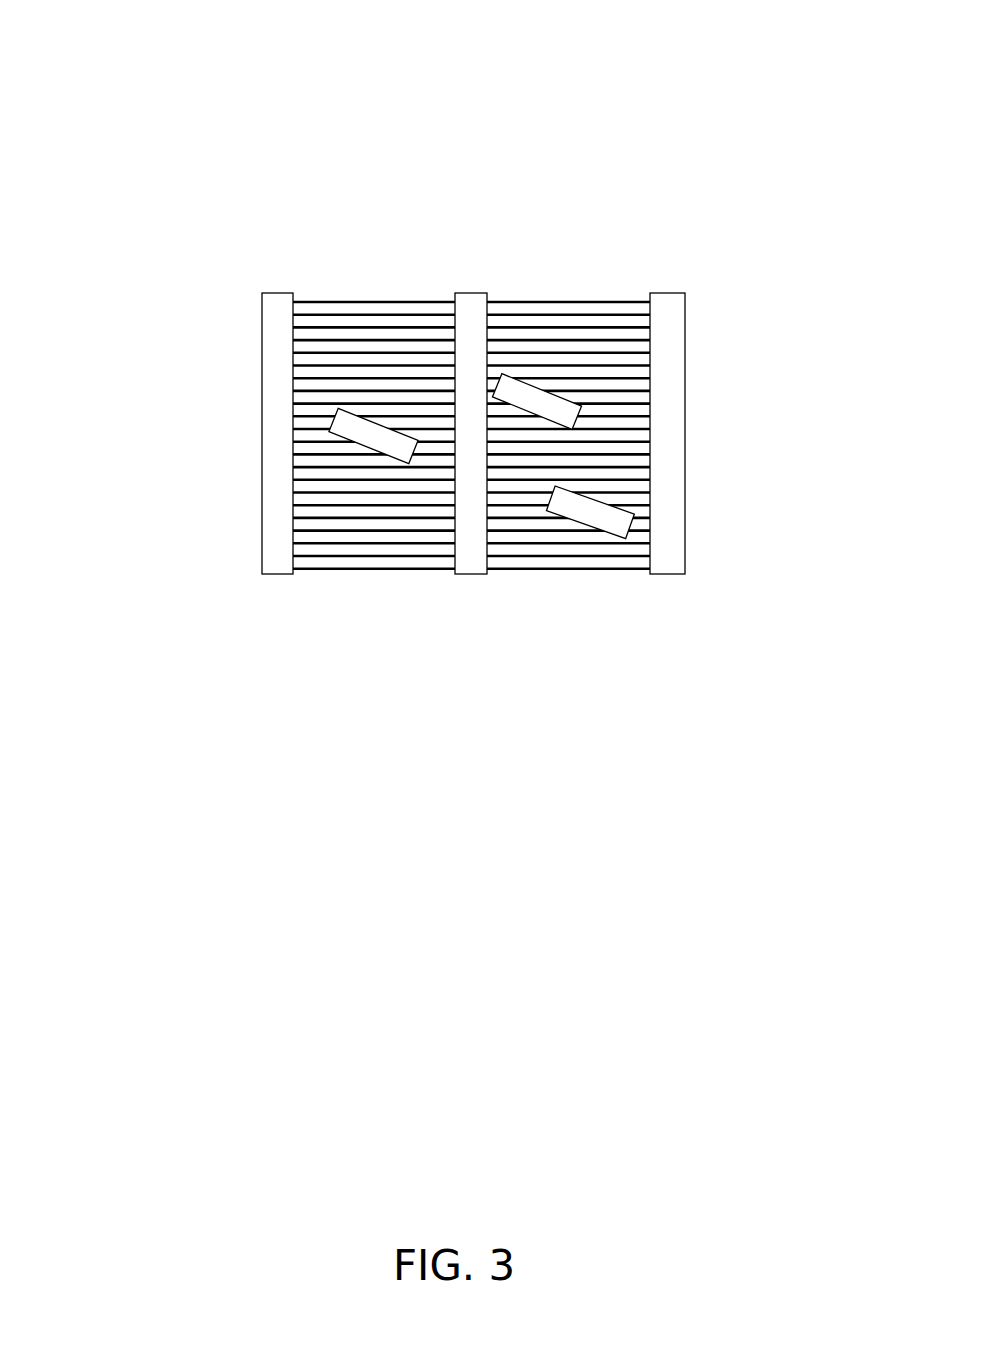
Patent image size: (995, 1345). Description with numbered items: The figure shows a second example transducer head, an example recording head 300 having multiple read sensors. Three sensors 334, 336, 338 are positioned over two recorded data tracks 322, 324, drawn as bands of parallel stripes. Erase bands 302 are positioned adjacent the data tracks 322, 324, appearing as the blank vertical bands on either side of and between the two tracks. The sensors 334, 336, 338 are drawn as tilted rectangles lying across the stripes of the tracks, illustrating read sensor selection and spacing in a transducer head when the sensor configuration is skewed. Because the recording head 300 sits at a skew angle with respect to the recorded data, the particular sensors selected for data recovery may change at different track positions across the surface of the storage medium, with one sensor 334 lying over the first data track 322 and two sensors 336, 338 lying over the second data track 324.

The recording head 300 is at (128, 91).
The erase bands 302 is at (278, 574).
The data track 322 is at (455, 294).
The data track 324 is at (650, 294).
The sensor 334 is at (332, 424).
The sensor 336 is at (580, 410).
The sensor 338 is at (632, 523).